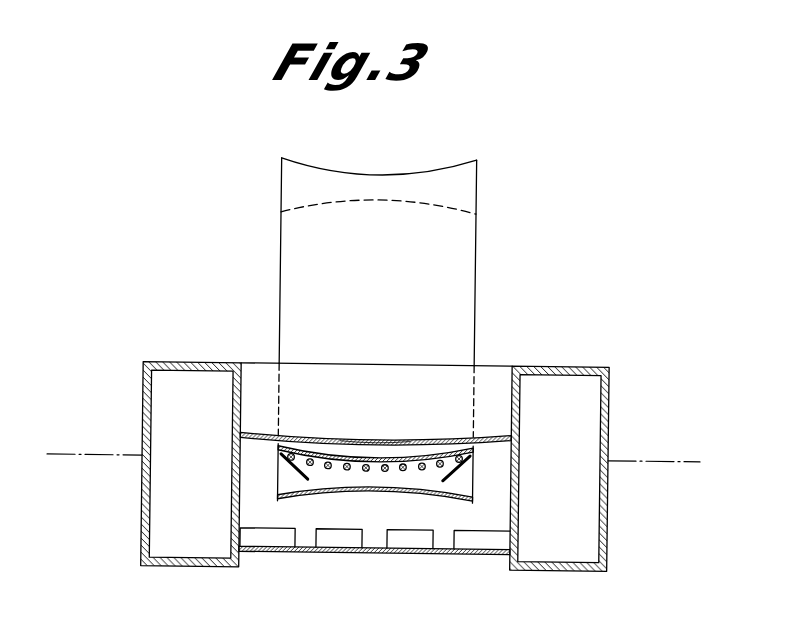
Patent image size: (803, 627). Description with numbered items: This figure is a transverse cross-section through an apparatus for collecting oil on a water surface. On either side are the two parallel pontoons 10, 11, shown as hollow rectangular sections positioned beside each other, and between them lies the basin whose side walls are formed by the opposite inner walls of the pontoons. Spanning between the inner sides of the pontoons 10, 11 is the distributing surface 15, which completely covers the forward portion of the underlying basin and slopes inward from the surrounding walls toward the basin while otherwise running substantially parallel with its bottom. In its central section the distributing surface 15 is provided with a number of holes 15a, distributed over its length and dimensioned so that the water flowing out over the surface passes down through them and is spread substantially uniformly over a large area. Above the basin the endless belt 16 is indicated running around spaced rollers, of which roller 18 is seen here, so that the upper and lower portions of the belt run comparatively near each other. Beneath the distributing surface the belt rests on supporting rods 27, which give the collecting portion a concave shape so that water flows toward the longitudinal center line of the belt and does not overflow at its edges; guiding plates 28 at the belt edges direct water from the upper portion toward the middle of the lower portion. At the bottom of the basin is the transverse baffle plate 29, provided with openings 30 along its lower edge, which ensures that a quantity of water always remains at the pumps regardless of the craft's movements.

The pontoon 10 is at (181, 340).
The pontoon 11 is at (562, 365).
The distributing surface 15 is at (268, 434).
The holes 15a is at (383, 441).
The endless belt 16 is at (460, 257).
The roller 18 is at (293, 188).
The supporting rods 27 is at (474, 458).
The guiding plates 28 is at (300, 465).
The baffle plate 29 is at (305, 530).
The openings 30 is at (418, 542).